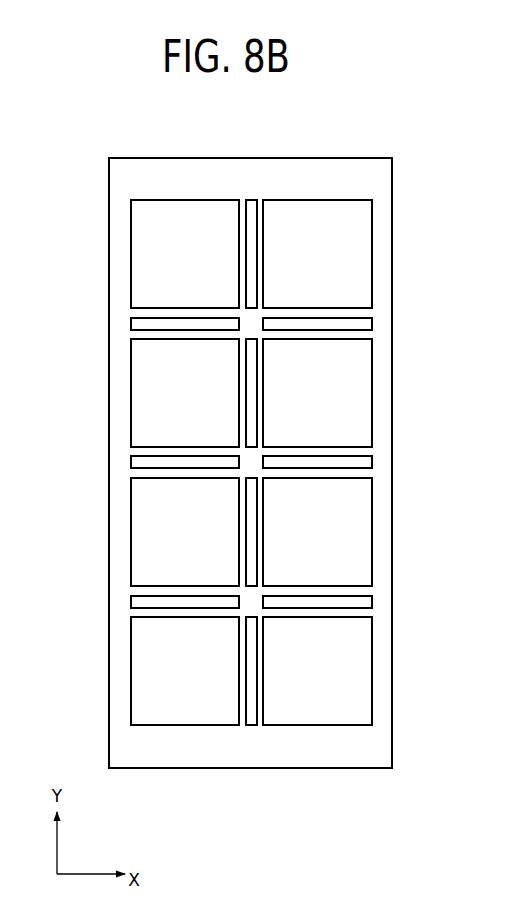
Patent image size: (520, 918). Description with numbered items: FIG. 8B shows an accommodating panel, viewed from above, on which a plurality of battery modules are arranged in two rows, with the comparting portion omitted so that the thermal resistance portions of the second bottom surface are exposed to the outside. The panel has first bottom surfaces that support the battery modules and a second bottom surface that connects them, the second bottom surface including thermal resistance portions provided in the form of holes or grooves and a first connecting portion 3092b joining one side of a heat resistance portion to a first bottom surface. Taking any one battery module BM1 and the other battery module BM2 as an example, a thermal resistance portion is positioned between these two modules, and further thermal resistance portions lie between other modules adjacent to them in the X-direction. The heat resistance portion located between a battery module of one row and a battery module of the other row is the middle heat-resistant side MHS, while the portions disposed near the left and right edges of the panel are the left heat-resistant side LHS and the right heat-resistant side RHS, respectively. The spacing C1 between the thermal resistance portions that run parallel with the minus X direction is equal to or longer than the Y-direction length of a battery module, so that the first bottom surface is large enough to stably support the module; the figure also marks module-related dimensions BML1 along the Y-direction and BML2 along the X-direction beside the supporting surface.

The first connecting portion 3092b is at (350, 322).
The middle heat-resistant side MHS is at (251, 193).
The left heat-resistant side LHS is at (130, 460).
The right heat-resistant side RHS is at (375, 459).
The battery module BM1 is at (317, 532).
The battery module BM2 is at (317, 671).
The spacing C1 is at (131, 468).
The first mesh opening length BML1 is at (131, 617).
The second mesh opening width BML2 is at (131, 725).